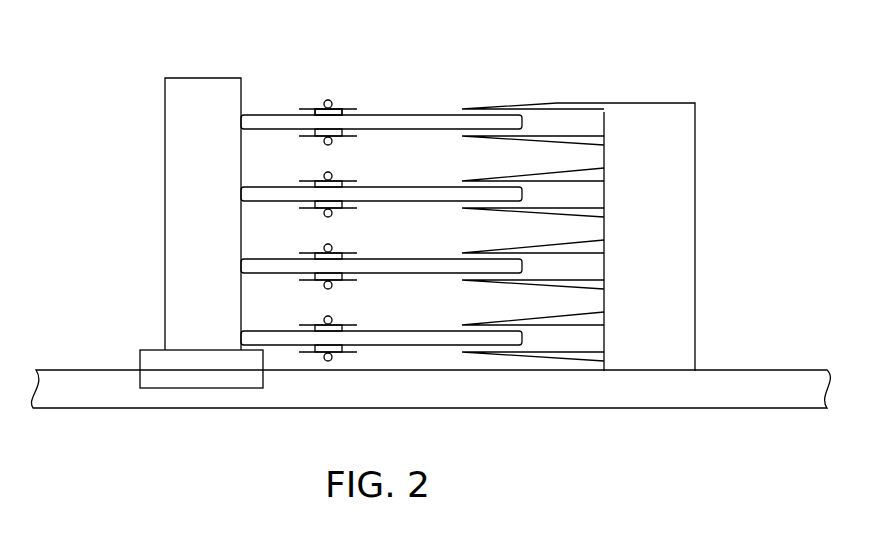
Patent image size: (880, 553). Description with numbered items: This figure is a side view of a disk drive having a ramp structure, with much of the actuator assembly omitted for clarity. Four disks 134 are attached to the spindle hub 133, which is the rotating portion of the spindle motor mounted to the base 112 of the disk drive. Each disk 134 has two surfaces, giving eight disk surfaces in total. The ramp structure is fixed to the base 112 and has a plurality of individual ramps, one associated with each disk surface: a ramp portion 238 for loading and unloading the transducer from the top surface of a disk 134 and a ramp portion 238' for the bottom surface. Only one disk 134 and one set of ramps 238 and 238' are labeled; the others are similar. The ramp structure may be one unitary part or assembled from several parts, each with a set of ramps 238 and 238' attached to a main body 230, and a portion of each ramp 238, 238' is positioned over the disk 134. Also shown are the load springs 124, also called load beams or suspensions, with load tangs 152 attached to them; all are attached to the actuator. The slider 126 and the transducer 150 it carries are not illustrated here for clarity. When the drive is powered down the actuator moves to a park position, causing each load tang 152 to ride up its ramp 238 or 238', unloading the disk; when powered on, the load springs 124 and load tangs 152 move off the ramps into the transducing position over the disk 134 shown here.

The base 112 is at (719, 371).
The load spring 124 is at (346, 138).
The slider 126 is at (340, 112).
The spindle hub 133 is at (153, 350).
The disk 134 is at (421, 115).
The magnetic transducer 150 is at (318, 109).
The load tang 152 is at (330, 100).
The main body 230 is at (694, 168).
The ramp portion 238 is at (555, 204).
The ramp portion 238' is at (525, 158).